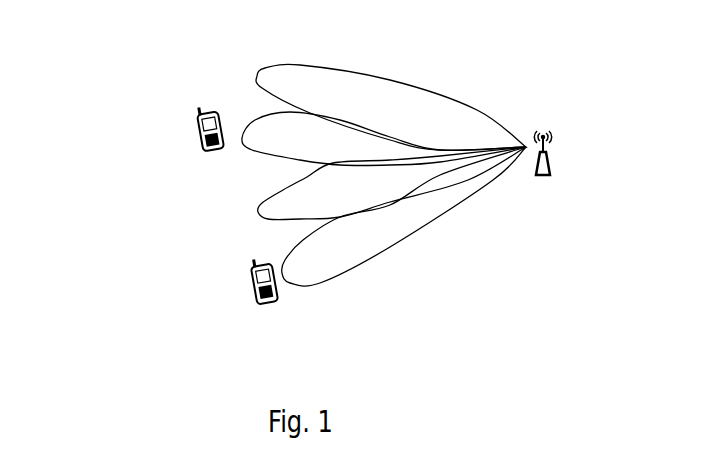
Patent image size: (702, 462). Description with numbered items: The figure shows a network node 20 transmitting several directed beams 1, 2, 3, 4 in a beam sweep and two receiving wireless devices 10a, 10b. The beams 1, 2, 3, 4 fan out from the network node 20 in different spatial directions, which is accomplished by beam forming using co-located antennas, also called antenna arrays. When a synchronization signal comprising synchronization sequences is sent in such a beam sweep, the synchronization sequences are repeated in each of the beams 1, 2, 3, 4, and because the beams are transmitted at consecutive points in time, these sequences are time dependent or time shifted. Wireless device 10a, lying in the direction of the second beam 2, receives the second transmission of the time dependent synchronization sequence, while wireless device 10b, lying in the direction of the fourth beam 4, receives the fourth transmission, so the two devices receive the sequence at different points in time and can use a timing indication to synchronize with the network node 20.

The directed beam 1 is at (391, 107).
The directed beam 2 is at (384, 138).
The directed beam 3 is at (392, 183).
The directed beam 4 is at (404, 216).
The wireless device 10a is at (200, 132).
The wireless device 10b is at (253, 278).
The network node 20 is at (550, 162).